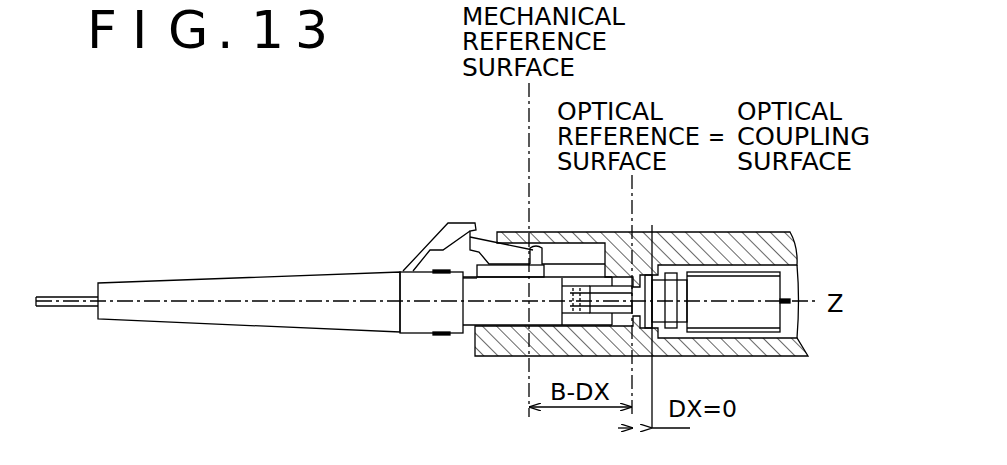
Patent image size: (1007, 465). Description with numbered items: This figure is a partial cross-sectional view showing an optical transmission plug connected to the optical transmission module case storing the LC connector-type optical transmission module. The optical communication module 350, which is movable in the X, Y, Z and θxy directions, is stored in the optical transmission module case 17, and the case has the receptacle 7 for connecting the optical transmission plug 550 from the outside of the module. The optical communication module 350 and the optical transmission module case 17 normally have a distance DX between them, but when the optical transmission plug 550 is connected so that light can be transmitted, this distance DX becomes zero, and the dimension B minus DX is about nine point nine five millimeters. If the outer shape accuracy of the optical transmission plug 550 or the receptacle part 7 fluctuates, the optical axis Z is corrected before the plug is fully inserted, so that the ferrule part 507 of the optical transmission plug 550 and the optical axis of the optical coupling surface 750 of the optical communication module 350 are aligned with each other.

The receptacle 7 is at (498, 357).
The optical transmission module case 17 is at (772, 357).
The optical communication module 350 is at (780, 322).
The ferrule part 507 is at (580, 260).
The optical transmission plug 550 is at (352, 272).
The optical coupling surface 750 is at (618, 278).